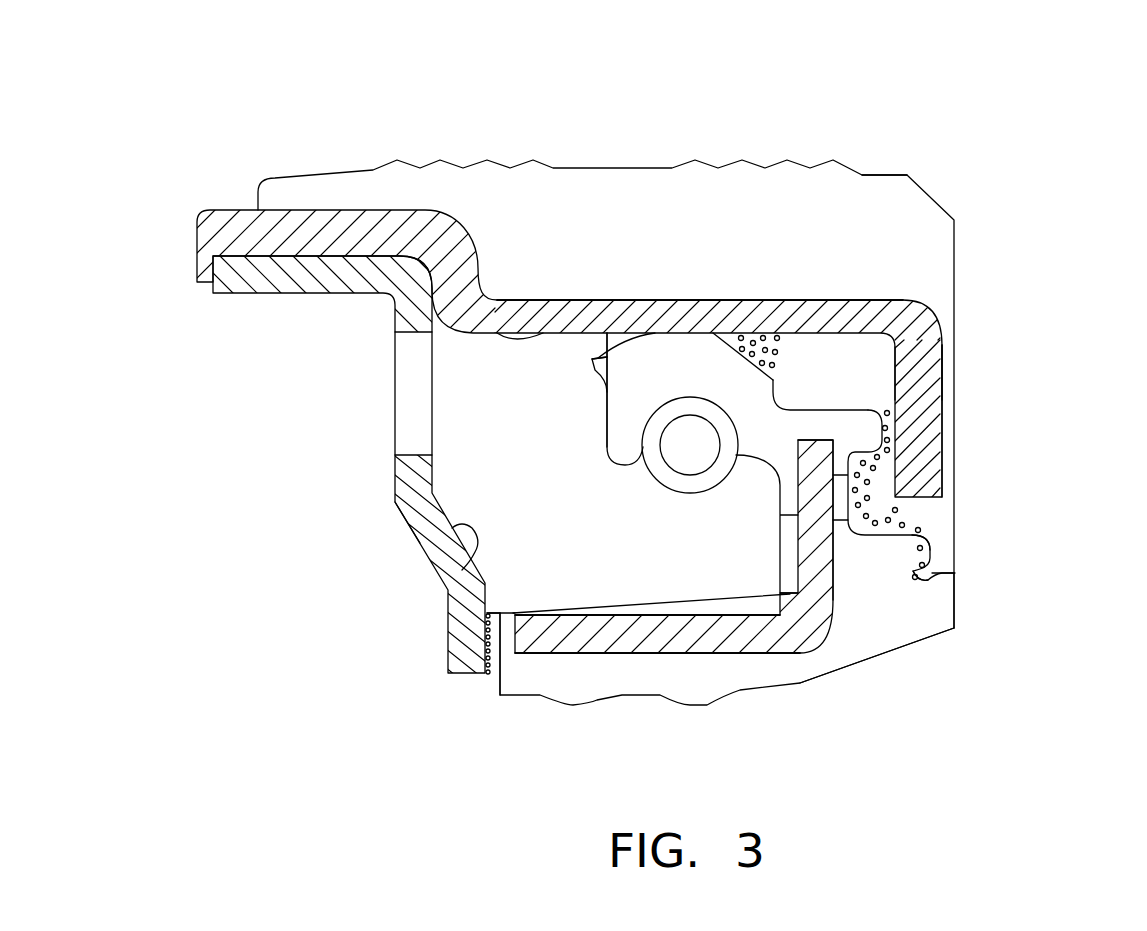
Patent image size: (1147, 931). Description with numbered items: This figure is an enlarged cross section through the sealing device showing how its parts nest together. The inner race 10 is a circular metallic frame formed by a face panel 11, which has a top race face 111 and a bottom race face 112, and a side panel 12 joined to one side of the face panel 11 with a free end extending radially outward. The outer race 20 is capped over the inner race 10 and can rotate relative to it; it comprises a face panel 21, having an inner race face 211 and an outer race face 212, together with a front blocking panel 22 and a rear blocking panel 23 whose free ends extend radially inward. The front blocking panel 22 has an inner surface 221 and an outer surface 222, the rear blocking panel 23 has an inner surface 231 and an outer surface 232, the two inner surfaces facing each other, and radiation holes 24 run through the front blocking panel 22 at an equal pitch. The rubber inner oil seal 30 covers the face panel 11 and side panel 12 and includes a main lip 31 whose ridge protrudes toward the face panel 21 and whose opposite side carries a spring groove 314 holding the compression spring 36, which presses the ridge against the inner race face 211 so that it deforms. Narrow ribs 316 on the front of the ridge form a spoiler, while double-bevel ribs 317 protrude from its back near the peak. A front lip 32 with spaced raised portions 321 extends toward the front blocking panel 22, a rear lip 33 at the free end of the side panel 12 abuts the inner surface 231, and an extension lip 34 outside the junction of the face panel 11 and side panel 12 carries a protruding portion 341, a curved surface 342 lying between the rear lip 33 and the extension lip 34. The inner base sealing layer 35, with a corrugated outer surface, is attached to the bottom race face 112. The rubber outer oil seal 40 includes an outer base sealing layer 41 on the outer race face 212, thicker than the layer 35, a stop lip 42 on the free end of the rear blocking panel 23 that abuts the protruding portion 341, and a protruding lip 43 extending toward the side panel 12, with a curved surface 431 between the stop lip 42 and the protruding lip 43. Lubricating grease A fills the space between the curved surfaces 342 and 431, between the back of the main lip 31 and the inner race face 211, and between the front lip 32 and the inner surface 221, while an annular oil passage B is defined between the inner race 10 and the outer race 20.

The inner race 10 is at (808, 650).
The face panel 11 is at (793, 775).
The top race face 111 is at (700, 617).
The bottom race face 112 is at (667, 655).
The side panel 12 is at (822, 563).
The outer race 20 is at (238, 207).
The face panel 21 is at (703, 58).
The inner race face 211 is at (587, 300).
The outer race face 212 is at (622, 300).
The front blocking panel 22 is at (244, 520).
The inner surface 221 is at (477, 542).
The outer surface 222 is at (402, 520).
The rear blocking panel 23 is at (1072, 320).
The inner surface 231 is at (892, 368).
The outer surface 232 is at (942, 365).
The radiation holes 24 is at (412, 397).
The inner oil seal 30 is at (903, 645).
The main lip 31 is at (682, 355).
The spring groove 314 is at (707, 397).
The narrow ribs 316 is at (673, 300).
The double-bevel ribs 317 is at (772, 327).
The front lip 32 is at (508, 637).
The raised portions 321 is at (495, 672).
The rear lip 33 is at (873, 423).
The extension lip 34 is at (910, 618).
The protruding portion 341 is at (955, 610).
The curved surface 342 is at (913, 560).
The inner base sealing layer 35 is at (588, 682).
The compression spring 36 is at (662, 482).
The outer oil seal 40 is at (418, 165).
The outer base sealing layer 41 is at (545, 208).
The stop lip 42 is at (943, 550).
The protruding lip 43 is at (883, 480).
The curved surface 431 is at (943, 512).
The lubricating grease A is at (835, 333).
The annular oil passage B is at (507, 445).